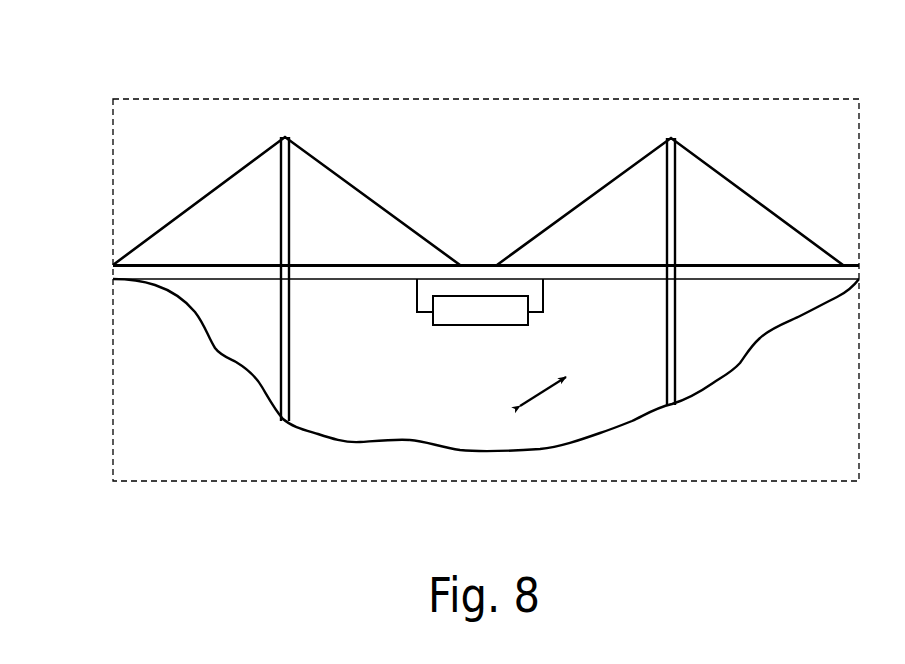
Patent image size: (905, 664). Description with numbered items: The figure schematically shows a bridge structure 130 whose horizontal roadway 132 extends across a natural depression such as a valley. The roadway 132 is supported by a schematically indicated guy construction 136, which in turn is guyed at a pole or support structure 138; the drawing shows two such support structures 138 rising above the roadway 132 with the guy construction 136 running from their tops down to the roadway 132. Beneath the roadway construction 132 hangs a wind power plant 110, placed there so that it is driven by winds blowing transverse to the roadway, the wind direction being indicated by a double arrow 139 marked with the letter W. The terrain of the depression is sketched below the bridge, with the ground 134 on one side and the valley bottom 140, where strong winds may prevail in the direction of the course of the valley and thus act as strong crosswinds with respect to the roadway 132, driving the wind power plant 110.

The bridge structure 130 is at (247, 81).
The horizontal roadway 132 is at (310, 273).
The ground / river bank 134 is at (208, 339).
The guy construction 136 is at (408, 226).
The pole or support structure 138 is at (280, 217).
The valley bottom 140 is at (627, 425).
The wind power plant 110 is at (435, 344).
The double arrow 139 is at (545, 393).